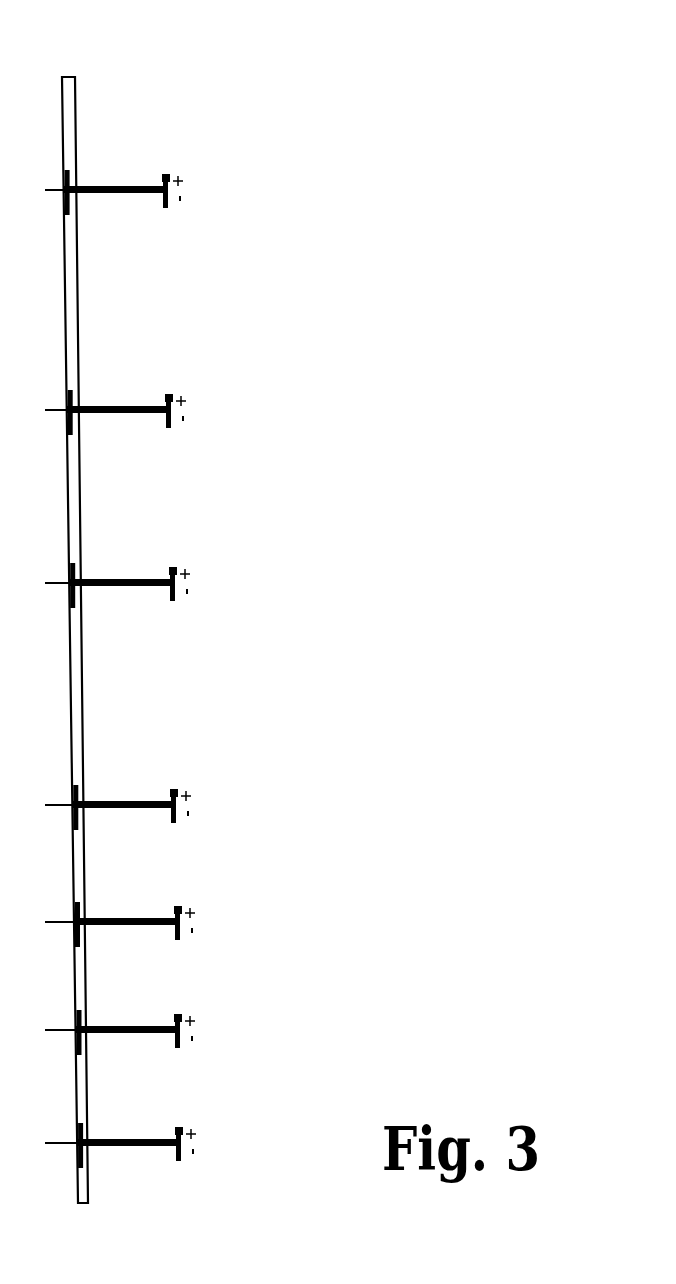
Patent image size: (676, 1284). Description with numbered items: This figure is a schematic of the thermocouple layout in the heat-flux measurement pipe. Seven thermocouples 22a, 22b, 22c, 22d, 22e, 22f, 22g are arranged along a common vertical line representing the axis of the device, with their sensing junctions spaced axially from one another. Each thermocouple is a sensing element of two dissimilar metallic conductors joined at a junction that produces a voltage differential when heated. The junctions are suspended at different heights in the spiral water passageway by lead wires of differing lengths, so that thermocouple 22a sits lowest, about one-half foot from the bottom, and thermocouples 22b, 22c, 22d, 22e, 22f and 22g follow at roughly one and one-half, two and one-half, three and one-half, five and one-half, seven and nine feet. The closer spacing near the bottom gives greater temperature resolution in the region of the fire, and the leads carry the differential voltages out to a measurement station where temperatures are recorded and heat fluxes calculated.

The thermocouple 22a is at (190, 188).
The thermocouple 22b is at (195, 410).
The thermocouple 22c is at (195, 580).
The thermocouple 22d is at (193, 802).
The thermocouple 22e is at (195, 922).
The thermocouple 22f is at (200, 1027).
The thermocouple 22g is at (200, 1125).